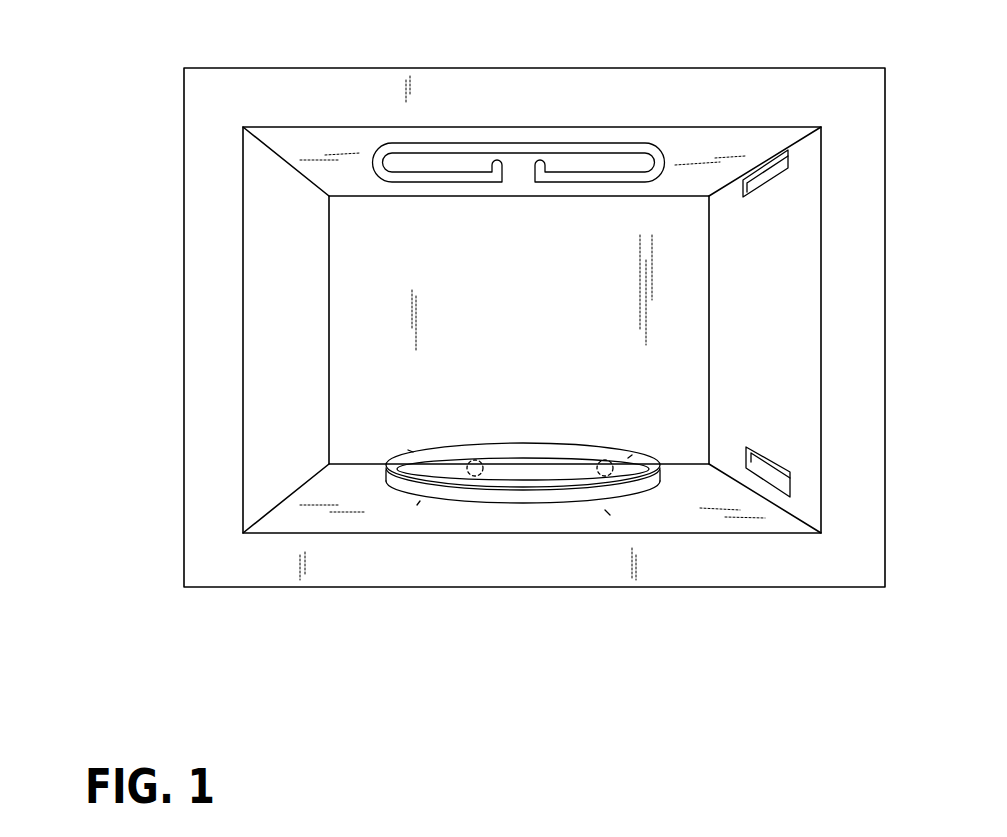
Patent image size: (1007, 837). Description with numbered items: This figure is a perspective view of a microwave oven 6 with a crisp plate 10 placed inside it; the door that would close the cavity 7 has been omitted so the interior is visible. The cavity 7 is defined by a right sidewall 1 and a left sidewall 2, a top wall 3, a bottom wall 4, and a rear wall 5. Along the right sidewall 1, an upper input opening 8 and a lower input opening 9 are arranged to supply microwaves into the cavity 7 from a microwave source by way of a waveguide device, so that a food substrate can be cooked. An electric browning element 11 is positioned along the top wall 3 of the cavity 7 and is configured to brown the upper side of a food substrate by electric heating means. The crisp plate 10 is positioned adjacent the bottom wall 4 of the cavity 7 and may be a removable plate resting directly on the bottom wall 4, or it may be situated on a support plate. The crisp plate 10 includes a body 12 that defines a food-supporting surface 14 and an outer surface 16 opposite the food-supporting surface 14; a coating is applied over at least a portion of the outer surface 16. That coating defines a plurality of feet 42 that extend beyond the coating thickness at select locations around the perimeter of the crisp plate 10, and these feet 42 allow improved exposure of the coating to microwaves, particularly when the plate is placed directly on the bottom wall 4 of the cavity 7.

The sidewall 1 is at (775, 287).
The sidewall 2 is at (301, 292).
The top wall 3 is at (352, 147).
The bottom wall 4 is at (312, 518).
The rear wall 5 is at (535, 297).
The microwave oven 6 is at (106, 126).
The cavity 7 is at (442, 372).
The upper input opening 8 is at (771, 170).
The lower input opening 9 is at (777, 470).
The crisp plate 10 is at (434, 528).
The electric browning element 11 is at (519, 148).
The body 12 is at (475, 512).
The food-supporting surface 14 is at (546, 492).
The outer surface 16 is at (525, 515).
The feet 42 is at (410, 450).